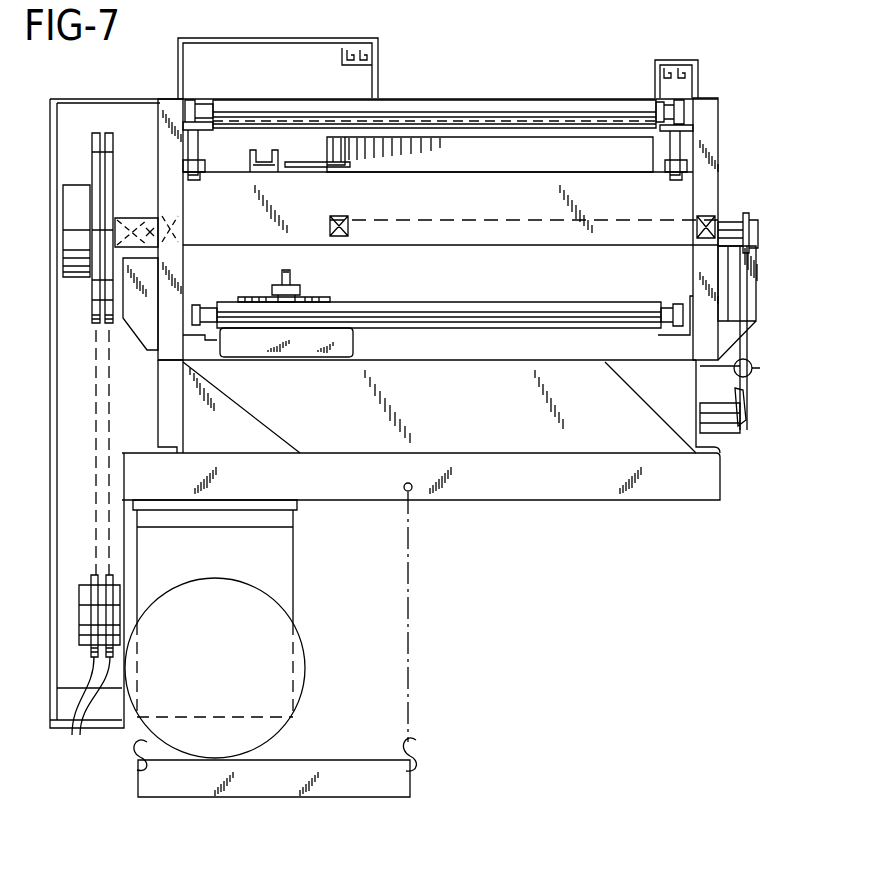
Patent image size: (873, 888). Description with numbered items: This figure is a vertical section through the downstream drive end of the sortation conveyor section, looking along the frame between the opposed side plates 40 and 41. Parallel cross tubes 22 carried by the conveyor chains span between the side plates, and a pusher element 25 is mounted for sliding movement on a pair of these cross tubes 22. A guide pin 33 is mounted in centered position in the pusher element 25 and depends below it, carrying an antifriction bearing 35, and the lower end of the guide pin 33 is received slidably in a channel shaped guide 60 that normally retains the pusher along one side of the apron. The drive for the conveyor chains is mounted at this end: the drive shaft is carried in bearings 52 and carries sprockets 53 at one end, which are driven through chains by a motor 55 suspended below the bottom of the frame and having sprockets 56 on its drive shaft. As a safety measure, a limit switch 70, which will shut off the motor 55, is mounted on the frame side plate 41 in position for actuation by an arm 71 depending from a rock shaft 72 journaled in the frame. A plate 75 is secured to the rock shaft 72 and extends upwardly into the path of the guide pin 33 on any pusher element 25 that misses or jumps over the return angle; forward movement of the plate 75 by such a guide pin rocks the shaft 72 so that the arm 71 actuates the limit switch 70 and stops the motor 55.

The cross tubes 22 is at (440, 100).
The pusher element 25 is at (308, 340).
The guide pin 33 is at (290, 270).
The antifriction bearing 35 is at (300, 292).
The side plate 40 is at (185, 195).
The side plate 41 is at (718, 130).
The bearings 52 is at (137, 218).
The sprockets 53 is at (96, 133).
The motor 55 is at (201, 648).
The sprockets 56 is at (92, 670).
The channel shaped guide 60 is at (276, 155).
The limit switch 70 is at (722, 433).
The arm 71 is at (748, 337).
The rock shaft 72 is at (730, 222).
The plate 75 is at (488, 160).